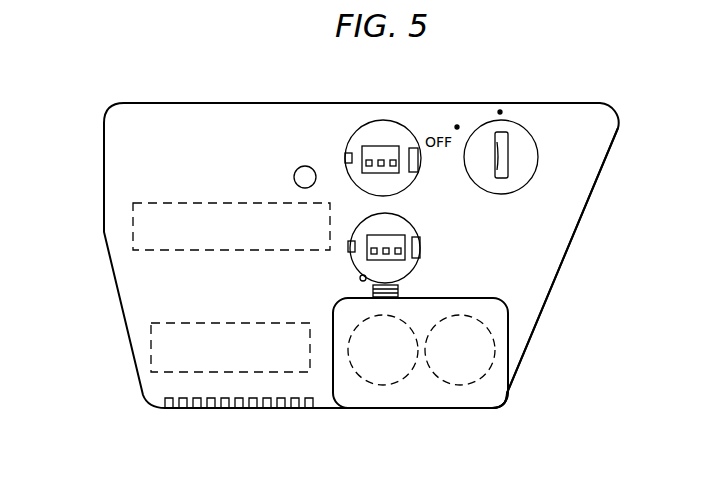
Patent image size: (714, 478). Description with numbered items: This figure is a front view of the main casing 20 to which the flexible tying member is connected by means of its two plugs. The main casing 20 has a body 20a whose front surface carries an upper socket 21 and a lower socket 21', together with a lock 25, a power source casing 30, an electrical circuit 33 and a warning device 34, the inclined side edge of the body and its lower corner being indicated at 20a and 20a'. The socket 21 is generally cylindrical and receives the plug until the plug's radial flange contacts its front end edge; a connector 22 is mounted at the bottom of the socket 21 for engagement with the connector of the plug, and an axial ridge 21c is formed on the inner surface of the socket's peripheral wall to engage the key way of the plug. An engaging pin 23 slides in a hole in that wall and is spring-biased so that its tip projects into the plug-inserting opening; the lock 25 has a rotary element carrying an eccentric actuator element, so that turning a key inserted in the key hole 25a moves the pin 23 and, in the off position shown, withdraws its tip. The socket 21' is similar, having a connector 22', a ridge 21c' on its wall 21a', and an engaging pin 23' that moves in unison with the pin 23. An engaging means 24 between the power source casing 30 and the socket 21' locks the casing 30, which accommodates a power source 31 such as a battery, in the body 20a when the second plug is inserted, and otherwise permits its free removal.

The main casing 20 is at (100, 166).
The casing body 20a is at (573, 260).
The lower corner of inclined side edge 20a' is at (534, 393).
The socket 21 is at (366, 136).
The axial ridge 21c is at (315, 146).
The connector 22 is at (380, 124).
The engaging pin 23 is at (422, 124).
The lock 25 is at (538, 155).
The key hole 25a is at (510, 150).
The socket 21' is at (358, 259).
The switch position mark 21c' is at (317, 262).
The switch stop 21a' is at (295, 298).
The connector 22' is at (407, 228).
The engaging pin 23' is at (443, 246).
The engaging means 24 is at (399, 292).
The power source casing 30 is at (465, 398).
The power source 31 is at (432, 375).
The electrical circuit 33 is at (150, 224).
The warning device 34 is at (252, 372).